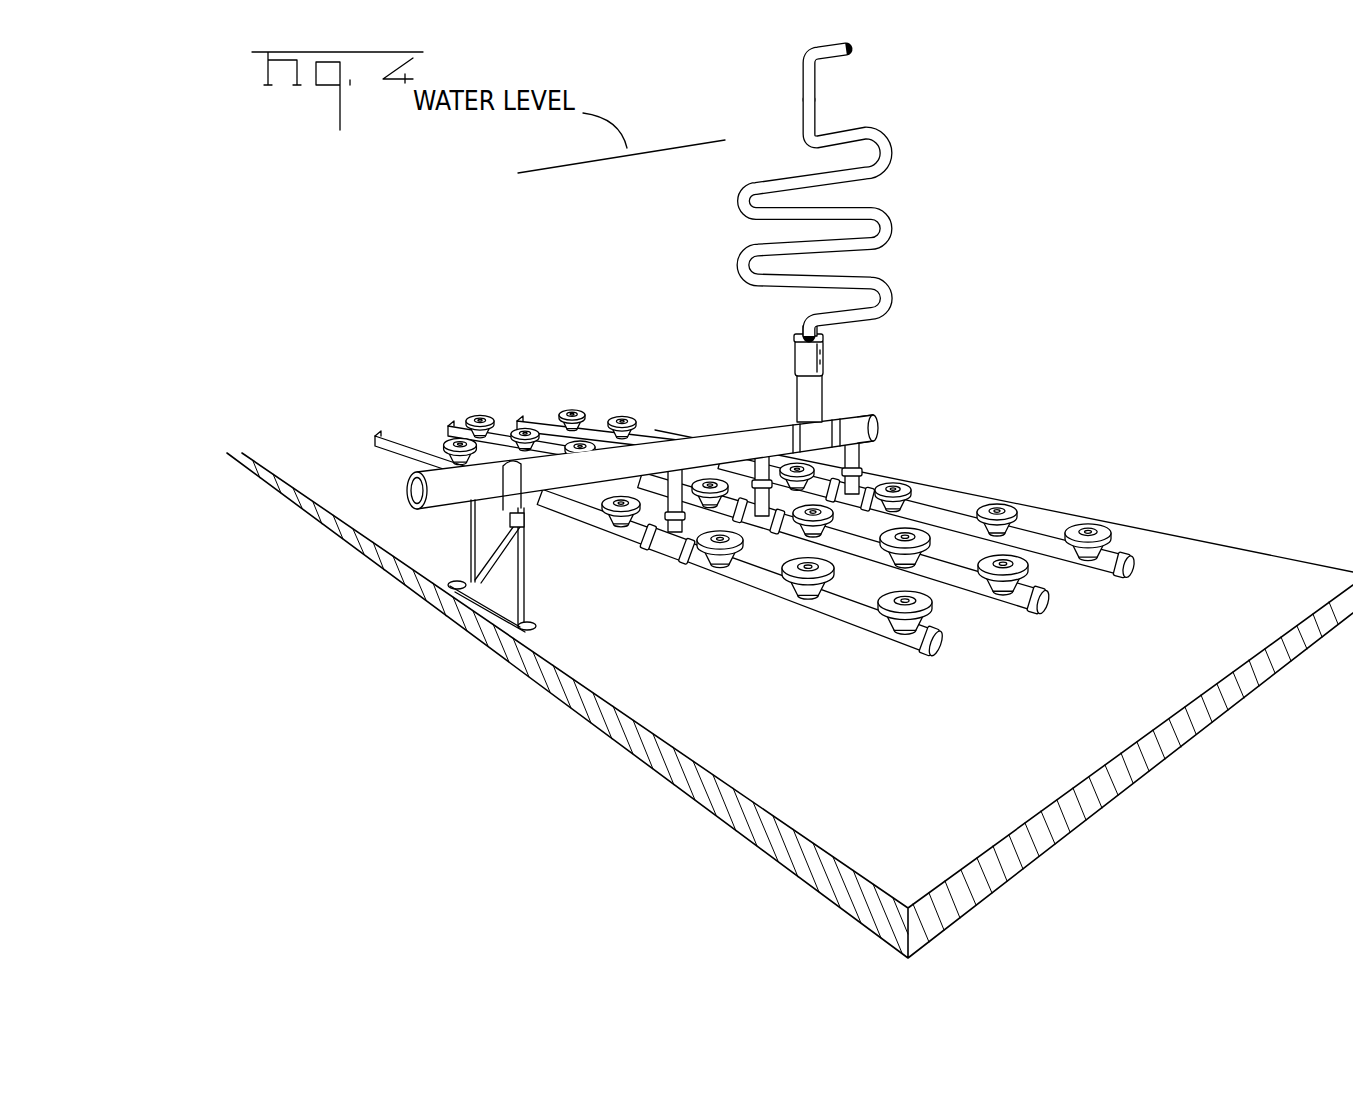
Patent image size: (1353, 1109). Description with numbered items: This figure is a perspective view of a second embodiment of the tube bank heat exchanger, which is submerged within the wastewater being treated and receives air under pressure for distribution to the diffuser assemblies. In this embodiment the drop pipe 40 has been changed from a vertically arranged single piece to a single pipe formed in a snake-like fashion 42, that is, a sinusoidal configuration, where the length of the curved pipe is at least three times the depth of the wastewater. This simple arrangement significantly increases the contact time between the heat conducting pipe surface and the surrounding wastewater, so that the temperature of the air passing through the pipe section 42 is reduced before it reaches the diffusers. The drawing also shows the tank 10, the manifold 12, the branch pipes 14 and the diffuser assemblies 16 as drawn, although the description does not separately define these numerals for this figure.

The platform 10 is at (655, 655).
The main supply pipe 12 is at (612, 458).
The branch pipes 14 is at (948, 512).
The spray nozzles 16 is at (898, 492).
The drop pipe 40 is at (805, 97).
The snake-like pipe section 42 is at (910, 238).